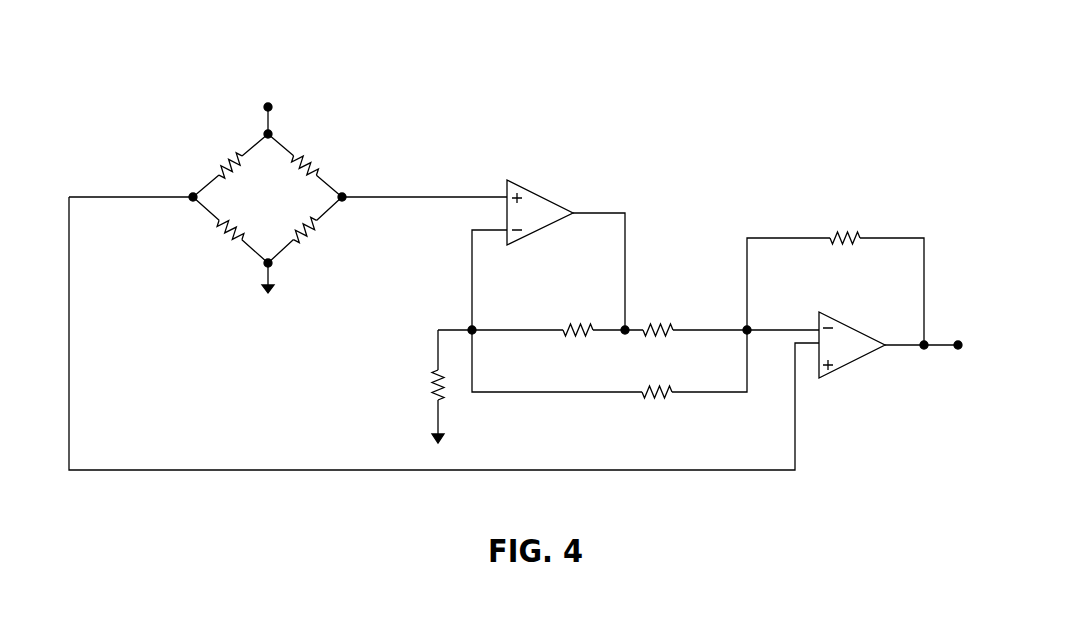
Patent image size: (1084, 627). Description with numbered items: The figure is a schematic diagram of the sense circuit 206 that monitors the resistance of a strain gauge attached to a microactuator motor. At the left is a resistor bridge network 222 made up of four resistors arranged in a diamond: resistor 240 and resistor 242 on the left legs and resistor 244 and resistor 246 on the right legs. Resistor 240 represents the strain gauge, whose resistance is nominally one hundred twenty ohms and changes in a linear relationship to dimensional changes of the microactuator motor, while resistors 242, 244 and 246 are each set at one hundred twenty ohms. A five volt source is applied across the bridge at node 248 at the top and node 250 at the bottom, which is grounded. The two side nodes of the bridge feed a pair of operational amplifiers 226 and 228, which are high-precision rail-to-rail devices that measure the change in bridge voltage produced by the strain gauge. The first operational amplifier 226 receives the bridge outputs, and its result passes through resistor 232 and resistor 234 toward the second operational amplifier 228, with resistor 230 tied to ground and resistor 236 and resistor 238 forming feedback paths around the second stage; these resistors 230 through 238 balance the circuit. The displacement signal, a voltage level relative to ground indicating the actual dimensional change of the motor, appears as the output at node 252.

The sense circuit 206 is at (334, 78).
The resistor bridge network 222 is at (252, 200).
The operational amplifier 226 is at (548, 194).
The operational amplifier 228 is at (852, 366).
The resistor 230 is at (429, 373).
The resistor 232 is at (573, 321).
The resistor 234 is at (672, 323).
The resistor 236 is at (643, 397).
The resistor 238 is at (838, 231).
The resistor 240 is at (220, 222).
The resistor 242 is at (218, 160).
The resistor 244 is at (360, 156).
The resistor 246 is at (310, 222).
The node 248 is at (266, 107).
The node 250 is at (312, 284).
The node 252 is at (959, 348).